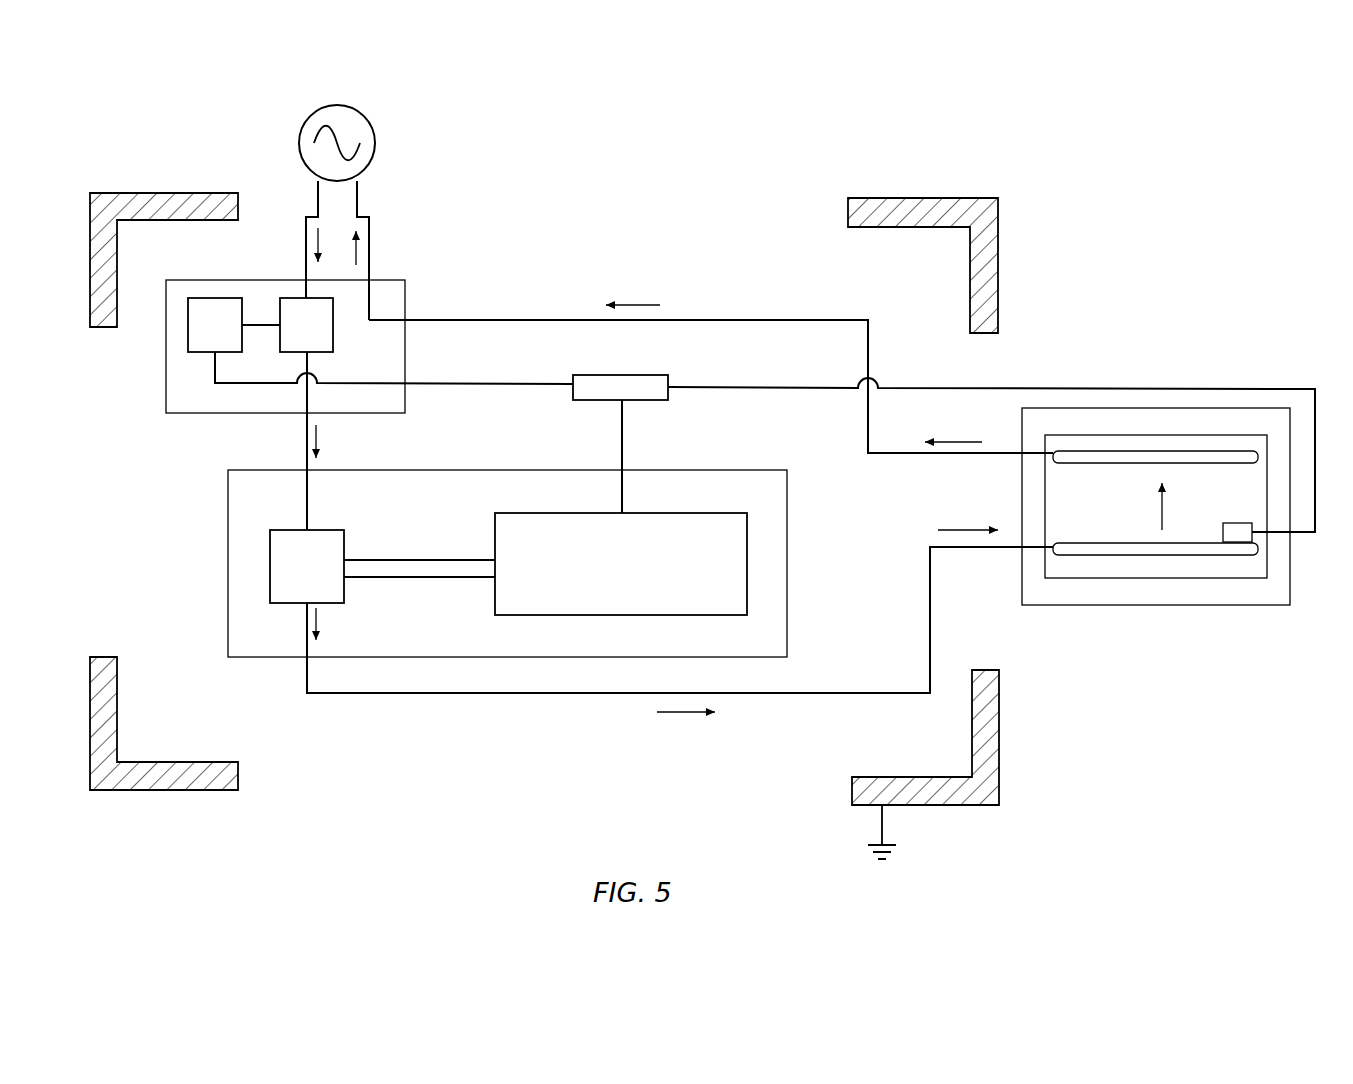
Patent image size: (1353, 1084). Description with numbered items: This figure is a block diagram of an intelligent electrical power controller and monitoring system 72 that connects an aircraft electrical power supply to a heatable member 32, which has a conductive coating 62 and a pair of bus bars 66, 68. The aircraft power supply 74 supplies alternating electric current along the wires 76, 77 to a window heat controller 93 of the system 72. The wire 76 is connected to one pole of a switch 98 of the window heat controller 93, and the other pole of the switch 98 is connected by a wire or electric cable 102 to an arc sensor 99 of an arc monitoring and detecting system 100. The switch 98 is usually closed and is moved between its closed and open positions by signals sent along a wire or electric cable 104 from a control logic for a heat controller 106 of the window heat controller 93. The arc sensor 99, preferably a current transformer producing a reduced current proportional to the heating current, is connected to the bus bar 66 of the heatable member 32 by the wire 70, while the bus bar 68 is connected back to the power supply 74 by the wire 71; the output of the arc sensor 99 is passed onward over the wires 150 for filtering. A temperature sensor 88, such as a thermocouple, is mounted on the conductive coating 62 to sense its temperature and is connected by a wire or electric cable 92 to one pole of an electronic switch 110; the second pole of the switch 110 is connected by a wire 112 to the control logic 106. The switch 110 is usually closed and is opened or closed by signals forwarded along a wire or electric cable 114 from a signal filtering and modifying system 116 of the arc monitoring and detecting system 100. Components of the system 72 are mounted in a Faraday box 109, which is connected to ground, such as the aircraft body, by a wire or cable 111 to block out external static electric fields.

The heatable member 32 is at (1226, 624).
The conductive coating 62 is at (1124, 516).
The bus bar 66 is at (1125, 556).
The bus bar 68 is at (1161, 451).
The wire 70 is at (578, 694).
The wire 71 is at (868, 336).
The intelligent electrical power controller and monitoring system 72 is at (740, 226).
The aircraft power supply 74 is at (373, 125).
The wire 76 is at (306, 262).
The wire 77 is at (370, 258).
The temperature sensor 88 is at (1223, 531).
The wire 92 is at (758, 388).
The window heat controller 93 is at (166, 380).
The switch 98 is at (333, 338).
The arc sensor 99 is at (318, 530).
The arc monitoring and detecting system 100 is at (274, 668).
The wire 102 is at (307, 448).
The wire 104 is at (262, 326).
The control logic for heat controller 106 is at (218, 298).
The Faraday box 109 is at (148, 193).
The electronic switch 110 is at (620, 375).
The wire 111 is at (896, 848).
The wire 112 is at (210, 372).
The wire 114 is at (622, 446).
The signal filtering and modifying system 116 is at (640, 615).
The wires 150 is at (410, 560).